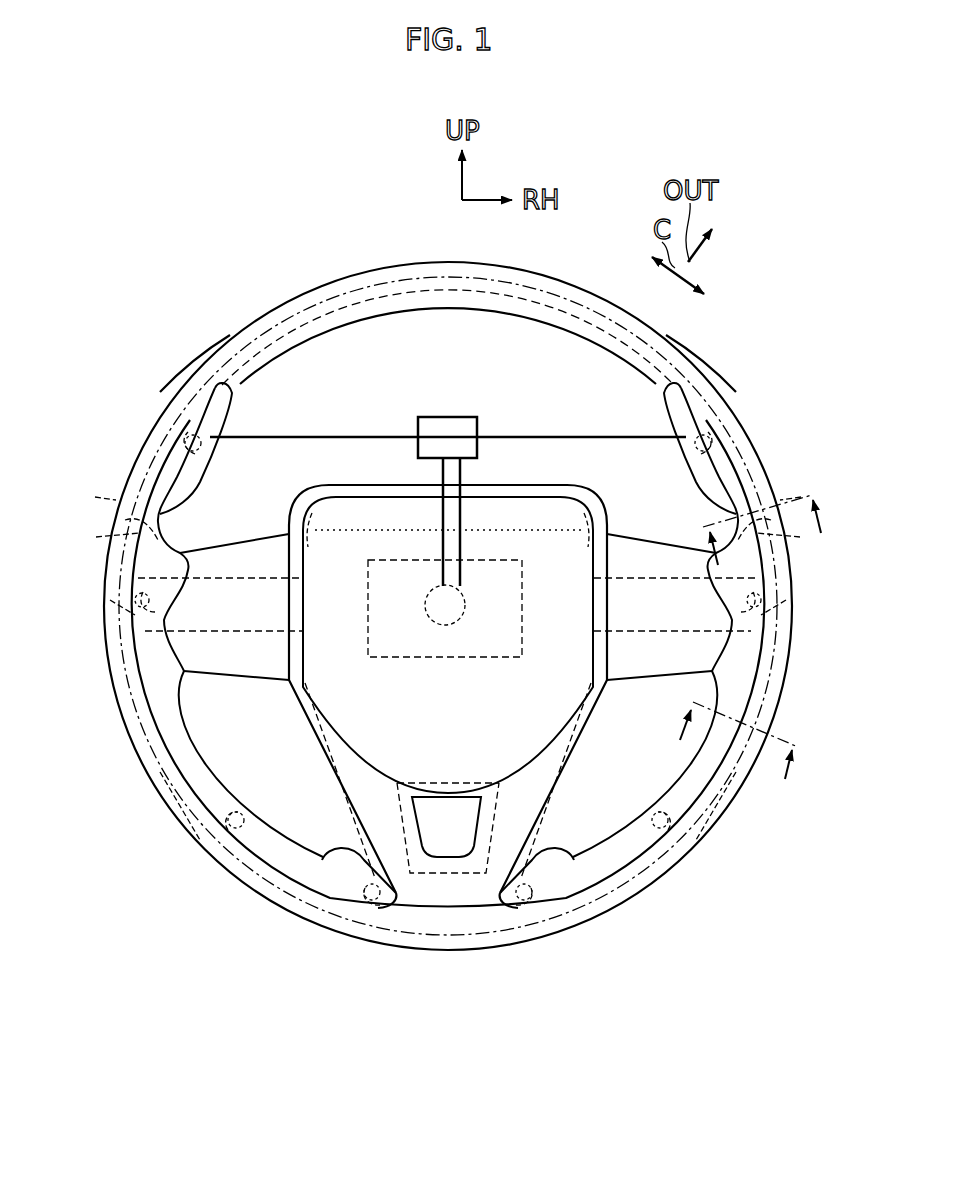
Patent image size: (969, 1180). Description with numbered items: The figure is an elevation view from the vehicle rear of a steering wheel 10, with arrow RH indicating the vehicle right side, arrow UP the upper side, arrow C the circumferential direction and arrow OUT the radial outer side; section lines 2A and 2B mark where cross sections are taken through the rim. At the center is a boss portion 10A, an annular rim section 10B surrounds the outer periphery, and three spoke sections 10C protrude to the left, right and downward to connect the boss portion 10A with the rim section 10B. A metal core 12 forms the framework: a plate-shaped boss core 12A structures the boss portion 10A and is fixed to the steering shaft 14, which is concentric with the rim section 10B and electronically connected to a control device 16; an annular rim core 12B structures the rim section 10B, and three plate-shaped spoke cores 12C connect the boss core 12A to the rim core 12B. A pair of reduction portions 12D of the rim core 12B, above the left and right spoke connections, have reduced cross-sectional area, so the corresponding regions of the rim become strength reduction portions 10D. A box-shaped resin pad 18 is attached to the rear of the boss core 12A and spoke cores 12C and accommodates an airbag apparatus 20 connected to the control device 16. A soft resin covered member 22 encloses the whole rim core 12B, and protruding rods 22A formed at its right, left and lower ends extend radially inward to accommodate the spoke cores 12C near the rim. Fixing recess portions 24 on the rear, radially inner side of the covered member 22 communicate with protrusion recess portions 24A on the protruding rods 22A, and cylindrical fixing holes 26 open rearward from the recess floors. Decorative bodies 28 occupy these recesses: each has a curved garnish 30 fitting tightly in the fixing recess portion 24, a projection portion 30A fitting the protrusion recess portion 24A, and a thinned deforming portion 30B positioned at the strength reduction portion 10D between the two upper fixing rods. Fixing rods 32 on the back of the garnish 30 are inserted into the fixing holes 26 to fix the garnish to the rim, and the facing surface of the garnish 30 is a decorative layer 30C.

The steering wheel 10 is at (178, 318).
The boss portion 10A is at (342, 485).
The rim section 10B is at (312, 290).
The spoke sections 10C is at (250, 535).
The strength reduction portions 10D is at (126, 492).
The core 12 is at (330, 528).
The boss core 12A is at (570, 522).
The rim core 12B is at (574, 312).
The spoke cores 12C is at (241, 637).
The reduction portions 12D is at (132, 508).
The steering shaft 14 is at (465, 603).
The control device 16 is at (449, 417).
The pad 18 is at (466, 492).
The airbag apparatus 20 is at (445, 657).
The covered member 22 is at (461, 240).
The protruding rods 22A is at (172, 684).
The fixing recess portions 24 is at (190, 833).
The protrusion recess portions 24A is at (160, 658).
The fixing holes 26 is at (190, 438).
The decorative bodies 28 is at (268, 867).
The garnish 30 is at (162, 778).
The projection portions 30A is at (192, 578).
The deforming portions 30B is at (163, 512).
The decorative layer 30C is at (160, 540).
The fixing rods 32 is at (186, 447).
The section line 2A is at (729, 758).
The section line 2B is at (774, 537).